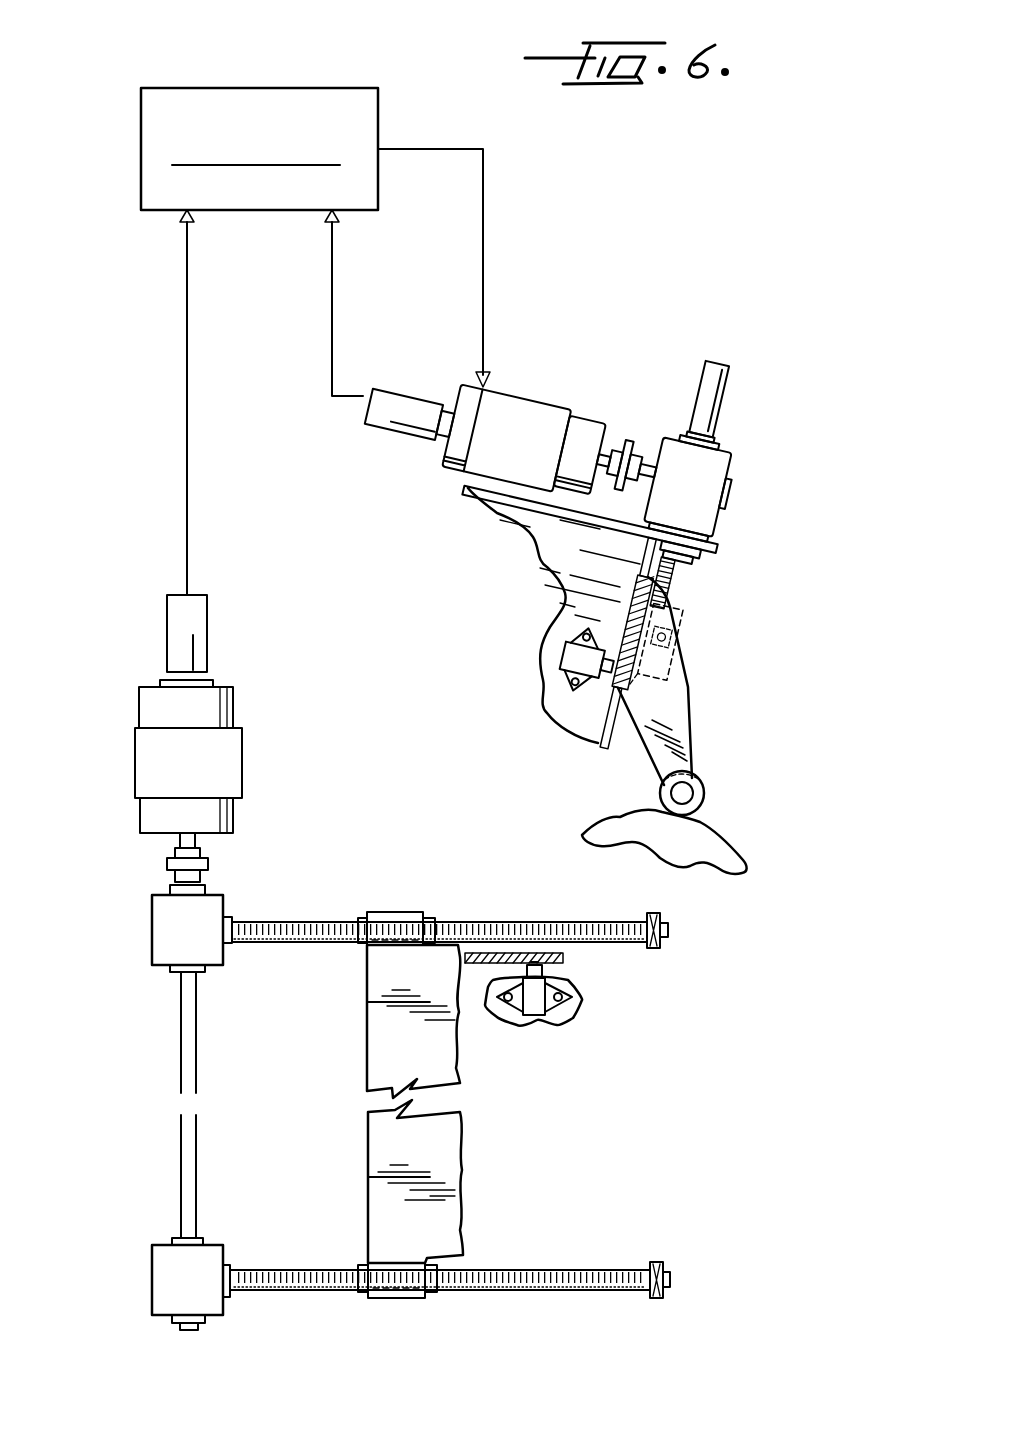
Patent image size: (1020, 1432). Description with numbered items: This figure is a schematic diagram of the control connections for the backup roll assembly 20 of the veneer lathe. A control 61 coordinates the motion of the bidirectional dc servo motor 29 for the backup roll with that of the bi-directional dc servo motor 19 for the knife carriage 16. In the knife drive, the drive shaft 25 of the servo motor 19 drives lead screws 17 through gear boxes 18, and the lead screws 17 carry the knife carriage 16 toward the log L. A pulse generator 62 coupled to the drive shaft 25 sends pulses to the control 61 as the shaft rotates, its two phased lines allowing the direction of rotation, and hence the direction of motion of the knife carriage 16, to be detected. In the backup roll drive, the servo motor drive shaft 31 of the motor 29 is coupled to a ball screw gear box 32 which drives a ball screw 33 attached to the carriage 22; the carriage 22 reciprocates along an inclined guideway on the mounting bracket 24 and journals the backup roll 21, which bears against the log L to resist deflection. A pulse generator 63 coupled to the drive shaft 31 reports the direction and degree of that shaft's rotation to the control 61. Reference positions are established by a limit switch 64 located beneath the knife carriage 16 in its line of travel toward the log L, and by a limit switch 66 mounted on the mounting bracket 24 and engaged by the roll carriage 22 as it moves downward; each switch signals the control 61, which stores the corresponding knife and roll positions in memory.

The control 61 is at (207, 88).
The pulse generator 62 is at (167, 633).
The pulse generator 63 is at (382, 430).
The bidirectional dc servo motor 29 is at (540, 396).
The backup roll assembly 20 is at (628, 384).
The servo motor drive shaft 31 is at (608, 452).
The ball screw gear box 32 is at (726, 462).
The ball screw 33 is at (678, 582).
The mounting bracket 24 is at (544, 560).
The carriage 22 is at (690, 704).
The backup roll 21 is at (705, 797).
The log L is at (736, 848).
The limit switch 66 is at (560, 664).
The bi-directional dc servo motor 19 is at (140, 768).
The drive shaft 25 is at (178, 840).
The gear boxes 18 is at (155, 935).
The lead screws 17 is at (300, 918).
The knife carriage 16 is at (368, 1033).
The limit switch 64 is at (535, 1012).